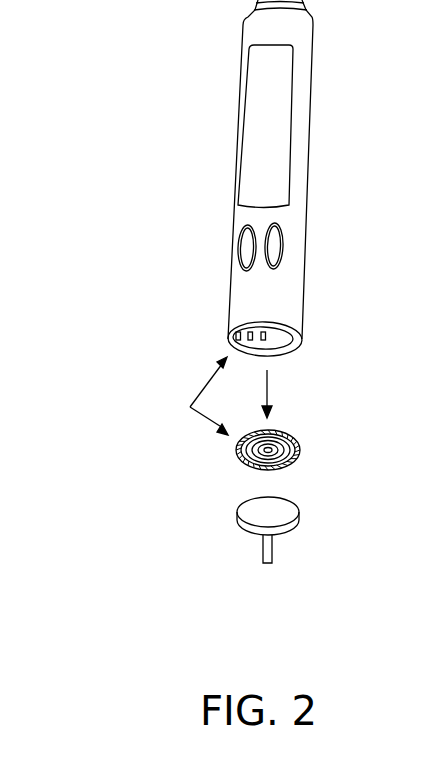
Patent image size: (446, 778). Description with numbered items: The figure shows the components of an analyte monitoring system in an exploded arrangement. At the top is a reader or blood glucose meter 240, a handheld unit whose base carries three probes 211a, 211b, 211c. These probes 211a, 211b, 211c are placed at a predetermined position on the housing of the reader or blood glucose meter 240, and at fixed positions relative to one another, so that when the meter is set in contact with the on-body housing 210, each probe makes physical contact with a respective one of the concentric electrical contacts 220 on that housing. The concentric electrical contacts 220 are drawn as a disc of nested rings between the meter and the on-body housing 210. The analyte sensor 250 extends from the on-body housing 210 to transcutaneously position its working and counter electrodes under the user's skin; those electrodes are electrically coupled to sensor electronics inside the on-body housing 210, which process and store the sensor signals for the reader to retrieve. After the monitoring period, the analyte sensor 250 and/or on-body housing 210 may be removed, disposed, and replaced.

The reader or blood glucose meter 240 is at (239, 100).
The probe 211a is at (250, 331).
The probe 211b is at (237, 333).
The probe 211c is at (263, 332).
The concentric electrical contacts 220 is at (245, 462).
The on-body housing 210 is at (263, 513).
The analyte sensor 250 is at (272, 558).